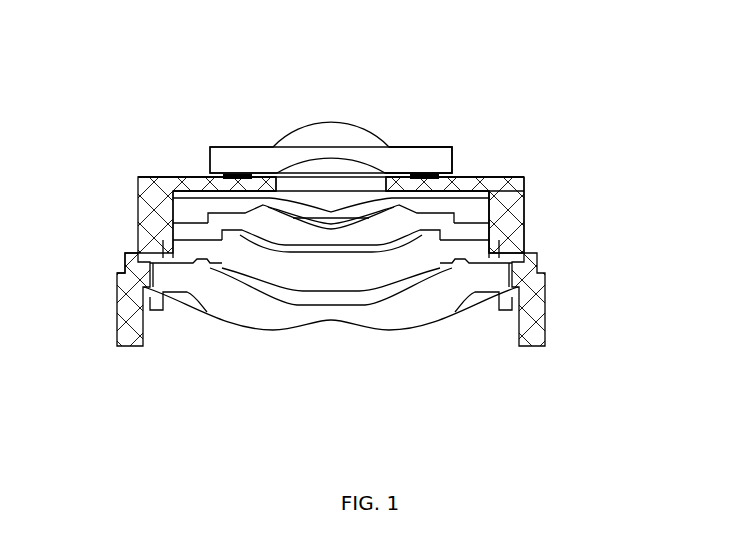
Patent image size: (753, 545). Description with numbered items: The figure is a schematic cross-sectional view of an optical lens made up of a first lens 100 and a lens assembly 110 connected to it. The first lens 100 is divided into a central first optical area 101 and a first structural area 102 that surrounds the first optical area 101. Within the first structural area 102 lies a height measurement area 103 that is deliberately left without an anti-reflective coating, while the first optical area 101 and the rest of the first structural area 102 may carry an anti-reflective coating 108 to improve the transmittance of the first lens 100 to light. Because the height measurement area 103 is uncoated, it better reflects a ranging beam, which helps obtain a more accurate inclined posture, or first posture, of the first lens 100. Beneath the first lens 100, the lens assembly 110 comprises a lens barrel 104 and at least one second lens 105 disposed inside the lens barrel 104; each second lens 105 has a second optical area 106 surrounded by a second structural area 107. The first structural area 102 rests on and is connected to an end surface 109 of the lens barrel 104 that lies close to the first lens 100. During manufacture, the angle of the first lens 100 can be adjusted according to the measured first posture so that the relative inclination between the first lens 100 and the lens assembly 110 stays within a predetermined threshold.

The first lens 100 is at (458, 160).
The first optical area 101 is at (341, 122).
The first structural area 102 is at (340, 210).
The height measurement area 103 is at (220, 172).
The lens barrel 104 is at (550, 288).
The second lens 105 is at (263, 318).
The second optical area 106 is at (142, 176).
The second structural area 107 is at (500, 222).
The anti-reflective coating 108 is at (387, 140).
The end surface 109 is at (200, 177).
The lens assembly 110 is at (130, 232).